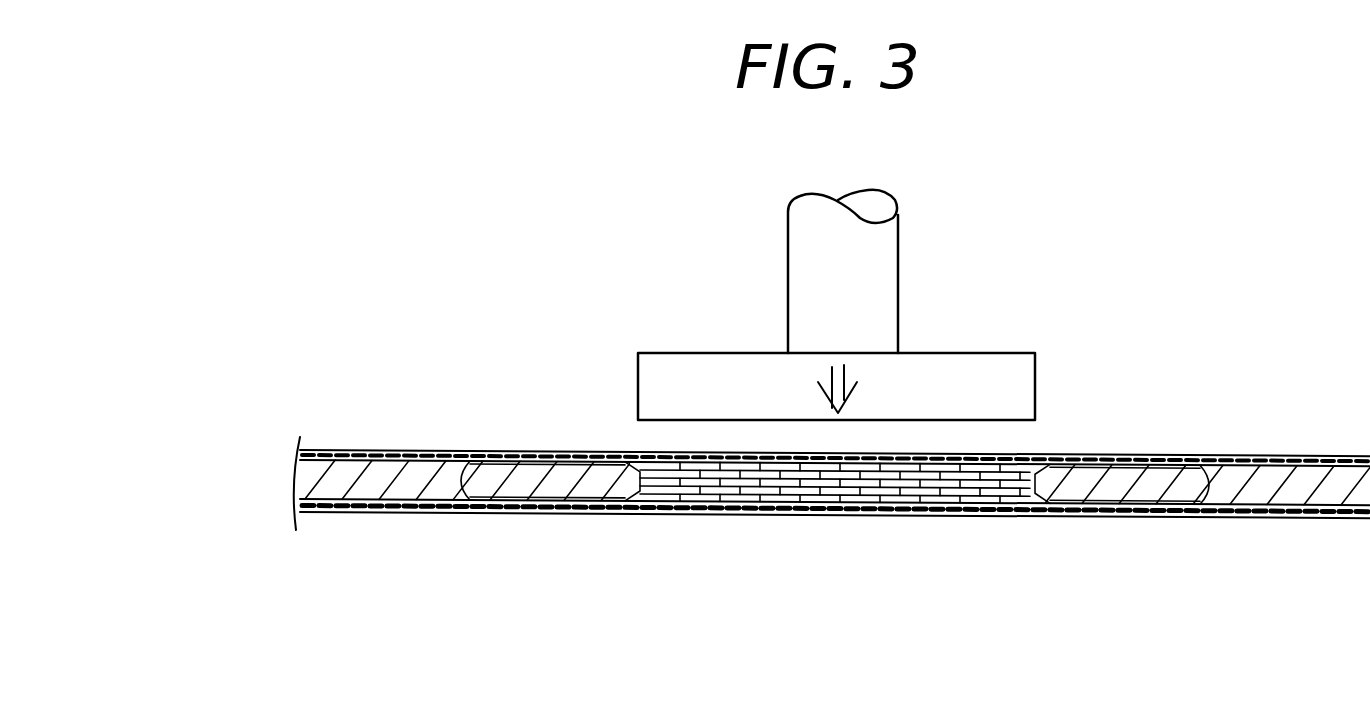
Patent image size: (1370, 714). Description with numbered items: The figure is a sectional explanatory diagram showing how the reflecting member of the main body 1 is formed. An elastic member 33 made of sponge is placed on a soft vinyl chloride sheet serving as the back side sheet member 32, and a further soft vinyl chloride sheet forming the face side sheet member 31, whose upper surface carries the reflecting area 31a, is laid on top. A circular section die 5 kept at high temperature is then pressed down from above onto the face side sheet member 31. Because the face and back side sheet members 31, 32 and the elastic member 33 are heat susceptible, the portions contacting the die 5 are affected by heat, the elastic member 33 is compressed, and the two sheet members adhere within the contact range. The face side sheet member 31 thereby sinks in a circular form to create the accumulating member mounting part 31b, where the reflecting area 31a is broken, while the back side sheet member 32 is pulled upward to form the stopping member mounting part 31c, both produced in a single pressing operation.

The main body 1 is at (150, 335).
The die 5 is at (862, 287).
The face side sheet member 31 is at (347, 448).
The reflecting area 31a is at (508, 453).
The accumulating member mounting part 31b is at (1007, 458).
The stopping member mounting part 31c is at (955, 492).
The back side sheet member 32 is at (347, 512).
The elastic member 33 is at (327, 484).